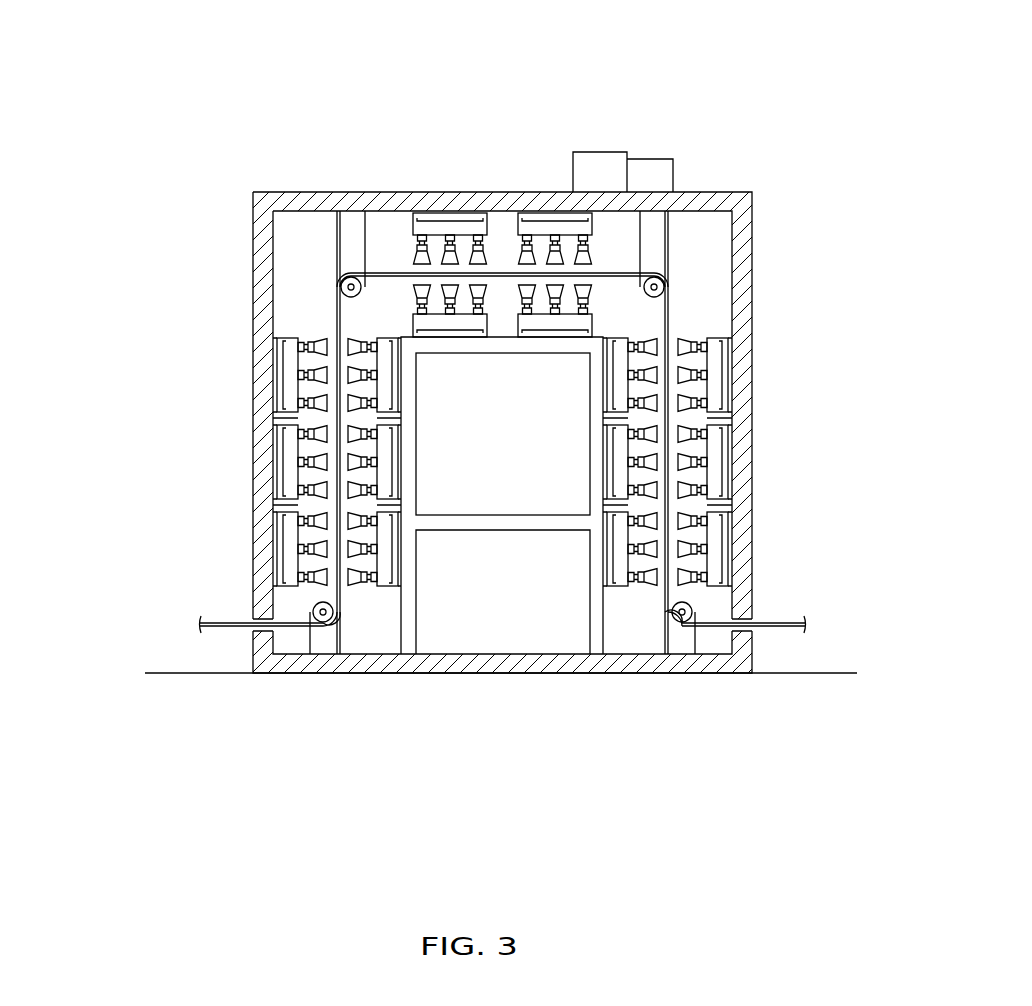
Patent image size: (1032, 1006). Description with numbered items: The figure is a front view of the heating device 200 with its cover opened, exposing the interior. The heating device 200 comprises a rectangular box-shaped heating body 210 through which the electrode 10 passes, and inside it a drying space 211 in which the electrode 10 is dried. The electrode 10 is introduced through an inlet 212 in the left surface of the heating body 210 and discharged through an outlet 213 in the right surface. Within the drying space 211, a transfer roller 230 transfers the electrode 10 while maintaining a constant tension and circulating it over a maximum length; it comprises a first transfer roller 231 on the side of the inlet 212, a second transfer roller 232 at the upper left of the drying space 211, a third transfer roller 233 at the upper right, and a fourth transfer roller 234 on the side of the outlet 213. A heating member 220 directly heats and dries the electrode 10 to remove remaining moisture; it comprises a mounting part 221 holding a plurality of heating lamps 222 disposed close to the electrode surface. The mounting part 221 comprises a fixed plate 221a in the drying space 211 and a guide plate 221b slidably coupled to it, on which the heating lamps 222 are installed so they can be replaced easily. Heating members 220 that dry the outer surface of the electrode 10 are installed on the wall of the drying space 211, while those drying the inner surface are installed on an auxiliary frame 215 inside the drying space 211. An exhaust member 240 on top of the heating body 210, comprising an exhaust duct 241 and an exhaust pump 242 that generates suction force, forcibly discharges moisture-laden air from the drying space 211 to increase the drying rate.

The electrode 10 is at (223, 621).
The heating device 200 is at (837, 753).
The heating body 210 is at (743, 243).
The drying space 211 is at (704, 297).
The inlet 212 is at (257, 628).
The outlet 213 is at (752, 628).
The auxiliary frame 215 is at (604, 628).
The heating member 220 is at (110, 250).
The mounting part 221 is at (163, 290).
The fixed plate 221a is at (273, 347).
The guide plate 221b is at (288, 380).
The heating lamps 222 is at (317, 340).
The transfer roller 230 is at (725, 753).
The first transfer roller 231 is at (323, 622).
The second transfer roller 232 is at (351, 277).
The third transfer roller 233 is at (668, 283).
The fourth transfer roller 234 is at (682, 622).
The exhaust member 240 is at (662, 85).
The exhaust duct 241 is at (598, 160).
The exhaust pump 242 is at (660, 167).